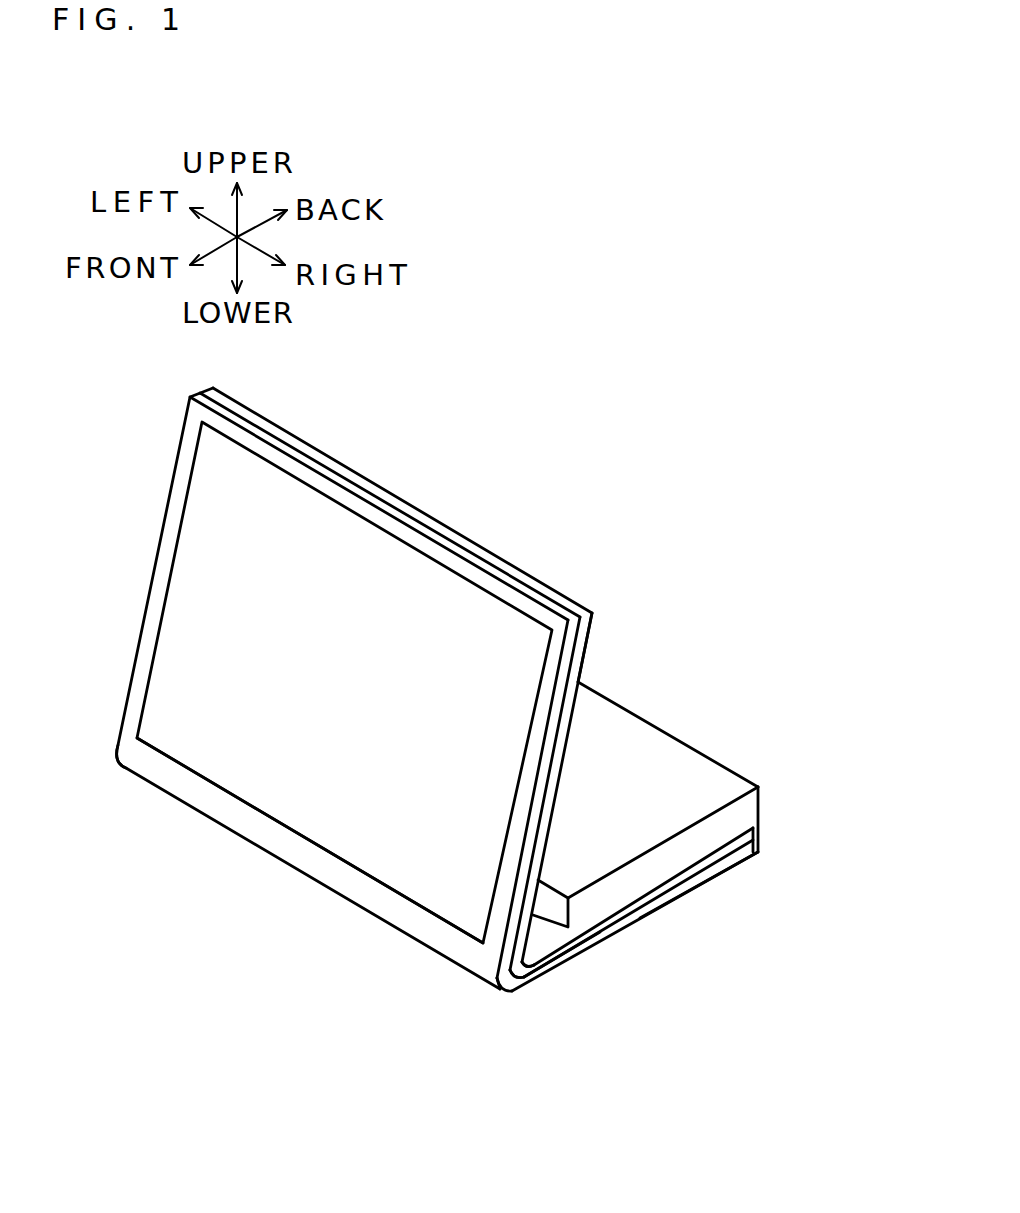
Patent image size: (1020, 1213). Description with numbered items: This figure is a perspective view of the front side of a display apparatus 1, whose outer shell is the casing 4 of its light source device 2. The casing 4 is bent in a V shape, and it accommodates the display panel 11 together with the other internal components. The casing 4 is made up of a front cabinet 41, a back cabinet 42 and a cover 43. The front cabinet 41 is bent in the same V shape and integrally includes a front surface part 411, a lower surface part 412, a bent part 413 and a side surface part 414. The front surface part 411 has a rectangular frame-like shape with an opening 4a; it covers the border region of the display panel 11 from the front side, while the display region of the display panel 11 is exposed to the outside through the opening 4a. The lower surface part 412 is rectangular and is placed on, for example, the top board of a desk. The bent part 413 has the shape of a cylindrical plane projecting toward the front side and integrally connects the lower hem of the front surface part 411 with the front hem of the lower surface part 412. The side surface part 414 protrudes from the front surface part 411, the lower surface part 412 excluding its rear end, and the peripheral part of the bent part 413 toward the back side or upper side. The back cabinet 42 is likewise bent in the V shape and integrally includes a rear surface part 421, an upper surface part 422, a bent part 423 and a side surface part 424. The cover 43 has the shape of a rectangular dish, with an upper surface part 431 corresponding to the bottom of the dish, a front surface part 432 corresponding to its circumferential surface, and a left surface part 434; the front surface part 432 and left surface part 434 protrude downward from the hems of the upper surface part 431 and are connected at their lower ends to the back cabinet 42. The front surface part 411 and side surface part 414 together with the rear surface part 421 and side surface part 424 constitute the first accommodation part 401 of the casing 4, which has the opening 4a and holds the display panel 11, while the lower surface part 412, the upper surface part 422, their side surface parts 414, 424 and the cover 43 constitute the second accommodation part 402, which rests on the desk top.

The display apparatus 1 is at (719, 486).
The light source device 2 is at (512, 1005).
The casing 4 is at (752, 692).
The opening 4a is at (248, 797).
The display panel 11 is at (372, 567).
The front cabinet 41 is at (557, 712).
The back cabinet 42 is at (562, 748).
The cover 43 is at (658, 780).
The first accommodation part 401 is at (480, 540).
The second accommodation part 402 is at (722, 745).
The front surface part 411 is at (347, 875).
The lower surface part 412 is at (720, 873).
The bent part 413 is at (500, 998).
The side surface part 414 is at (560, 962).
The rear surface part 421 is at (557, 802).
The upper surface part 422 is at (615, 898).
The bent part 423 is at (527, 955).
The side surface part 424 is at (583, 643).
The upper surface part 431 is at (703, 772).
The front surface part 432 is at (557, 917).
The left surface part 434 is at (742, 812).